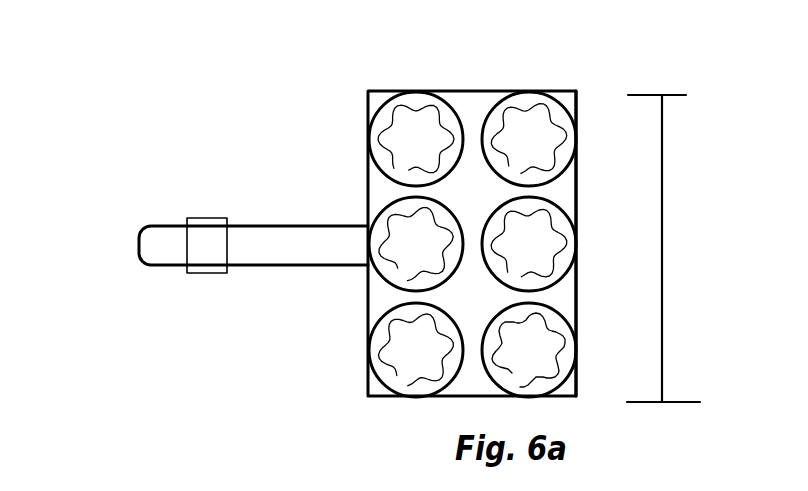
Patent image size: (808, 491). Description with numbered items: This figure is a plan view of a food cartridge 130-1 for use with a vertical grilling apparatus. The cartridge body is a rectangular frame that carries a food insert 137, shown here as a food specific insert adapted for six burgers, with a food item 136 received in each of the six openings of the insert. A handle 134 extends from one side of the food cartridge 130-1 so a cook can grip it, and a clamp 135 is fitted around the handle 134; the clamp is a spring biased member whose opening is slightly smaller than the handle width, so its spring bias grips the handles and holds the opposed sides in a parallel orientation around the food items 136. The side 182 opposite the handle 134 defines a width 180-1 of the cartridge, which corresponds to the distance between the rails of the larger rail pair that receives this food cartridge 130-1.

The food cartridge 130-1 is at (575, 90).
The handle 134 is at (308, 228).
The clamp 135 is at (207, 273).
The food item 136 is at (528, 247).
The food insert 137 is at (523, 91).
The width 180-1 is at (663, 192).
The side 182 is at (577, 167).